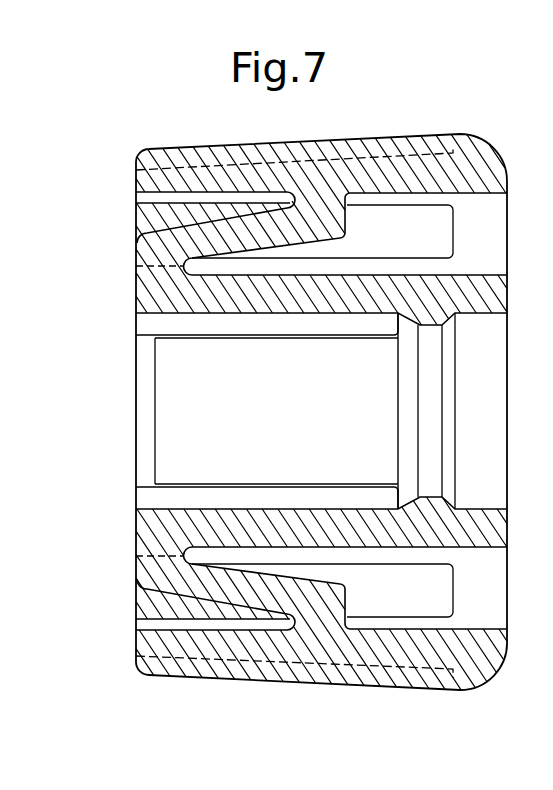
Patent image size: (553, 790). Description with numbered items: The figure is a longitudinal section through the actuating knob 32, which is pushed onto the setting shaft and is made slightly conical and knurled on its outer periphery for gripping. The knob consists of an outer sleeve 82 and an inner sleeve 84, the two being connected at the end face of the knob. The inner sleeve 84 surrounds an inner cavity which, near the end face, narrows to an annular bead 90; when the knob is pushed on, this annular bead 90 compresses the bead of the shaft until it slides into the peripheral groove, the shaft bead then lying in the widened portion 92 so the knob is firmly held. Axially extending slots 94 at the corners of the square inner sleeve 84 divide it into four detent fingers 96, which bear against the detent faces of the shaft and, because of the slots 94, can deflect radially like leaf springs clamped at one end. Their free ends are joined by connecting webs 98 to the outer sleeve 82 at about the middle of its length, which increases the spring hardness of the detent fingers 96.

The actuating knob 32 is at (435, 686).
The outer sleeve 82 is at (236, 648).
The inner sleeve 84 is at (141, 285).
The annular bead 90 is at (441, 367).
The widened portion 92 is at (479, 505).
The slots 94 is at (262, 329).
The detent fingers 96 is at (233, 308).
The connecting webs 98 is at (200, 236).